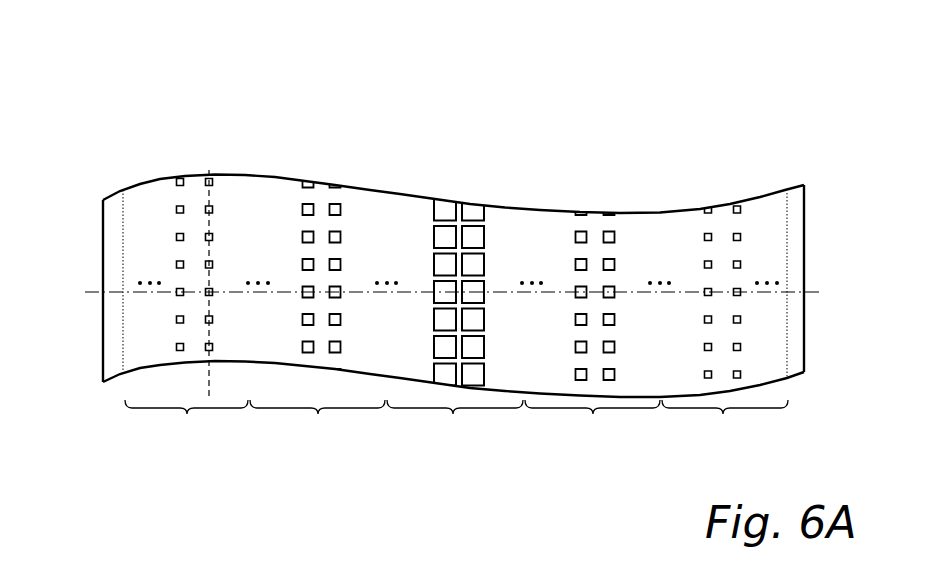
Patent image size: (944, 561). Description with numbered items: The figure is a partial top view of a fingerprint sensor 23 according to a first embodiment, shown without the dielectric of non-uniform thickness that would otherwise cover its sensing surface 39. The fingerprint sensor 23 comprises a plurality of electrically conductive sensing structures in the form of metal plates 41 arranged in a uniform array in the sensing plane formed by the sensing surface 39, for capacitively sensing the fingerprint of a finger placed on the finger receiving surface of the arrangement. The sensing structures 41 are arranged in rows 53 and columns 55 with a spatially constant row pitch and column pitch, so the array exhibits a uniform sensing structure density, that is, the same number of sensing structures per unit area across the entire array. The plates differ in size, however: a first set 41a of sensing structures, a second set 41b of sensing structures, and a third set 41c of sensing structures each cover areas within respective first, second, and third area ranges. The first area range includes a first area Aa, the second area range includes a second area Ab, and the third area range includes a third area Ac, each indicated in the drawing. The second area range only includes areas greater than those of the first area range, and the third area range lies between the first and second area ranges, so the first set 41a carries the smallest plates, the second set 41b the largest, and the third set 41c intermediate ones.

The fingerprint sensor 23 is at (803, 165).
The sensing surface 39 is at (545, 220).
The metal plates 41 is at (474, 321).
The first set of sensing structures 41a is at (456, 424).
The second set of sensing structures 41b is at (455, 424).
The third set of sensing structures 41c is at (455, 424).
The rows 53 is at (60, 286).
The columns 55 is at (209, 150).
The first area Aa is at (181, 205).
The second area Ab is at (445, 234).
The third area Ac is at (308, 232).